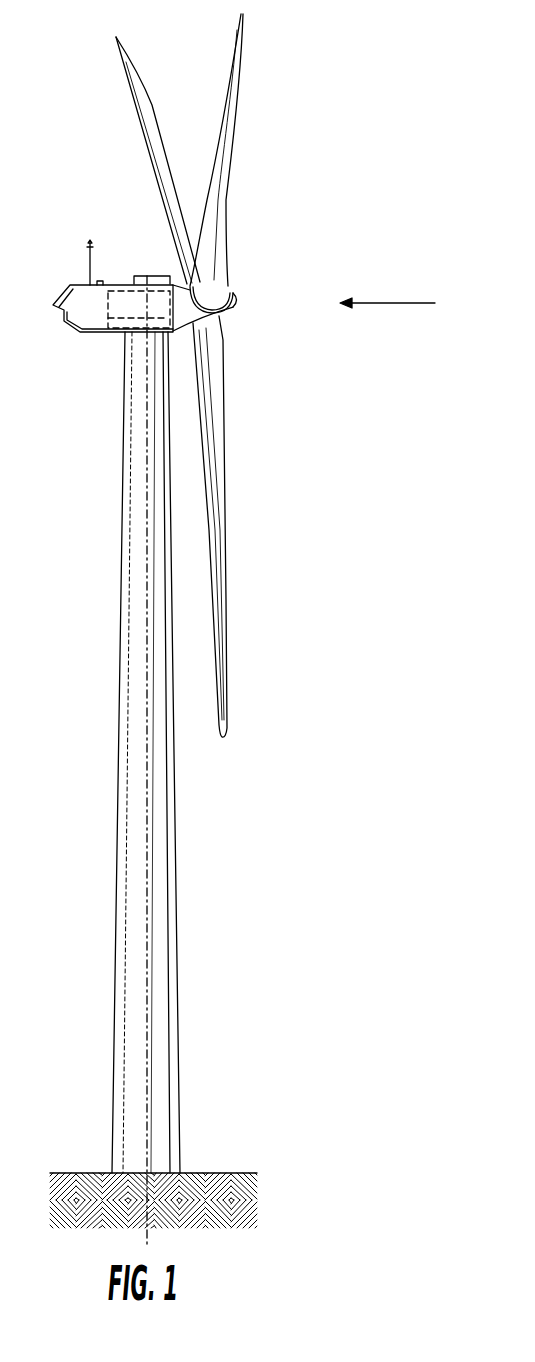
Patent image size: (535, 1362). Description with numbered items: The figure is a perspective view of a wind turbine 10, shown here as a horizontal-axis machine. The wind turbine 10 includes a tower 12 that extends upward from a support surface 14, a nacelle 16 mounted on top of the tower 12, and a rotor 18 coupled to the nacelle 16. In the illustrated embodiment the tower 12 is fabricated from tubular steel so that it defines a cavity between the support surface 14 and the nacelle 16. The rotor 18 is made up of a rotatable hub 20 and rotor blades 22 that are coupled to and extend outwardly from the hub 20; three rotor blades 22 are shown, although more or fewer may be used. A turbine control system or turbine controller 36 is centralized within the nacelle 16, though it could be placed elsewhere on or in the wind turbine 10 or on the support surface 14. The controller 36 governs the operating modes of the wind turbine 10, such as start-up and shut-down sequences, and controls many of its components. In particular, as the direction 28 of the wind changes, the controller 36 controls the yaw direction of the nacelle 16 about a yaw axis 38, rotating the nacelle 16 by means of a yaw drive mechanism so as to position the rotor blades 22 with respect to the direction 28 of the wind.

The wind turbine 10 is at (358, 148).
The tower 12 is at (157, 823).
The support surface 14 is at (73, 1173).
The nacelle 16 is at (92, 317).
The rotor 18 is at (240, 285).
The rotatable hub 20 is at (235, 308).
The rotor blade 22 is at (150, 143).
The direction of the wind 28 is at (395, 303).
The turbine controller 36 is at (123, 287).
The yaw axis 38 is at (147, 802).